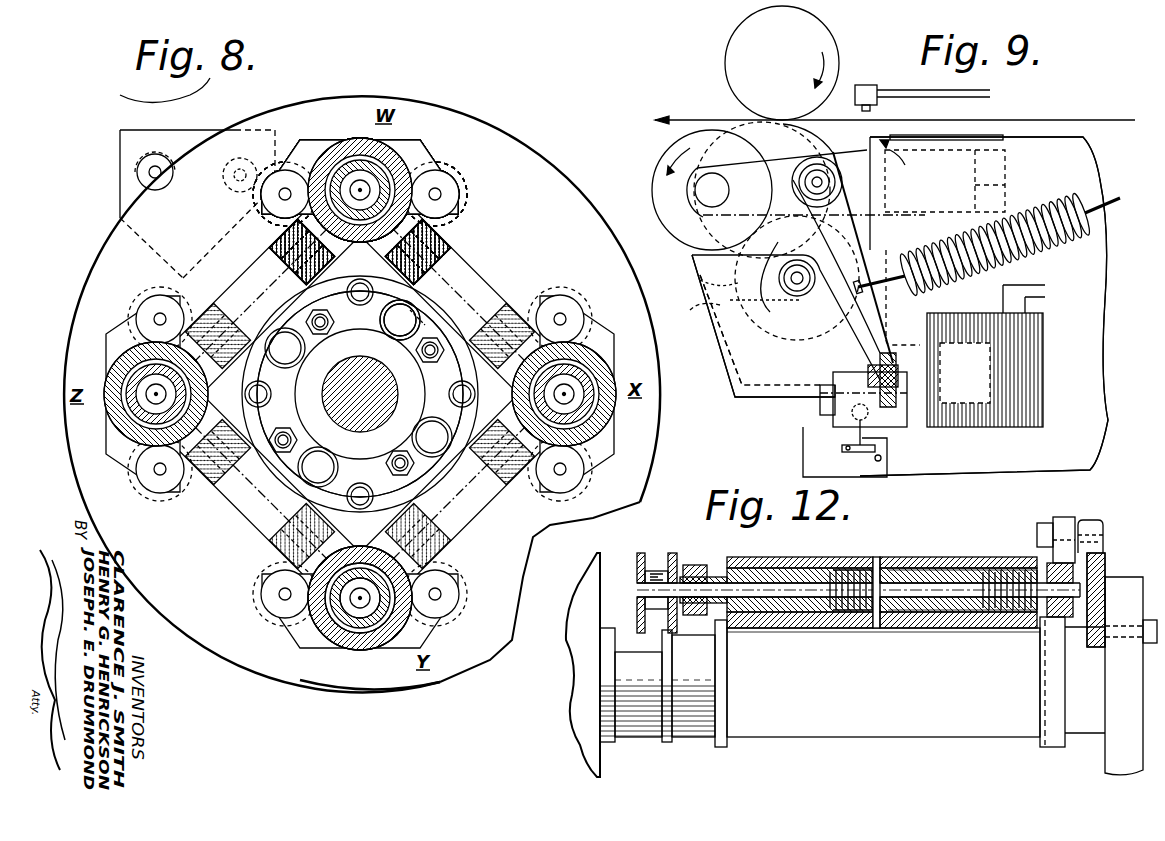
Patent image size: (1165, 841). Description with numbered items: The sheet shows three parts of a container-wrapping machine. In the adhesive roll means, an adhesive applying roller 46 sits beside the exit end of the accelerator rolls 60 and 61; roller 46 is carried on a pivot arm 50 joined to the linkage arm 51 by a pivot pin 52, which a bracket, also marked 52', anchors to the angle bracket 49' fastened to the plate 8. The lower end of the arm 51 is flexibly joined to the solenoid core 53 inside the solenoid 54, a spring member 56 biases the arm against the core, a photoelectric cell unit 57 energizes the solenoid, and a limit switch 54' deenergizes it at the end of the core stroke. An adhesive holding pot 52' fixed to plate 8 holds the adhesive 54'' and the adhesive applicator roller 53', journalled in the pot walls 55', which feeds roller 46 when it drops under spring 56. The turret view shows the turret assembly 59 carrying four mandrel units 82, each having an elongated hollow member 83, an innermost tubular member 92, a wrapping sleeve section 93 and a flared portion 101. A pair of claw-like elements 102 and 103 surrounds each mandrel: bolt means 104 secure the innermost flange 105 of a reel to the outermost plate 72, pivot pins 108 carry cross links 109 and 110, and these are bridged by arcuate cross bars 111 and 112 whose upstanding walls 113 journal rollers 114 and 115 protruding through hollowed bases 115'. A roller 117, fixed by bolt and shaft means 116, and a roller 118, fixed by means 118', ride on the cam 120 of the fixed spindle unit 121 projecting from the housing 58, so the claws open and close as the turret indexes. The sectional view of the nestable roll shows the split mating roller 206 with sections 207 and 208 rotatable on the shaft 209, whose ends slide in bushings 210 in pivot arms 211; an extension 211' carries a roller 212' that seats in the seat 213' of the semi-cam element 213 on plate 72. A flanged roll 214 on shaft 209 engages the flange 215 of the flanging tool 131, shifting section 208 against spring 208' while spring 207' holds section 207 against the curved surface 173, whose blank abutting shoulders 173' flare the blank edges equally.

In FIG. 9, the plate 8 is at (1086, 342).
In FIG. 9, the adhesive applying roller 46 is at (665, 153).
In FIG. 9, the angle bracket 49' is at (972, 176).
In FIG. 9, the pivot arm 50 is at (740, 222).
In FIG. 9, the linkage arm 51 is at (855, 228).
In FIG. 9, the pivot pin 52 is at (825, 166).
In FIG. 9, the adhesive holding pot 52' is at (870, 288).
In FIG. 9, the solenoid core 53 is at (872, 412).
In FIG. 9, the adhesive applicator roller 53' is at (797, 278).
In FIG. 9, the solenoid 54 is at (986, 370).
In FIG. 9, the limit switch 54' is at (845, 461).
In FIG. 9, the adhesive 54'' is at (705, 330).
In FIG. 9, the pot walls 55' is at (763, 342).
In FIG. 9, the spring member 56 is at (1035, 250).
In FIG. 9, the photoelectric cell unit 57 is at (865, 84).
In FIG. 12, the housing 58 is at (575, 728).
In FIG. 8, the turret assembly 59 is at (388, 688).
In FIG. 9, the accelerator roll 60 is at (790, 76).
In FIG. 9, the accelerator roll 61 is at (800, 152).
In FIG. 8, the outermost turret plate 72 is at (272, 665).
In FIG. 12, the outermost turret plate 72 is at (1112, 755).
In FIG. 8, the mandrel unit 82 is at (362, 135).
In FIG. 12, the mandrel unit 82 is at (898, 740).
In FIG. 8, the elongated hollow member 83 is at (322, 645).
In FIG. 8, the innermost hollow tubular member 92 is at (365, 612).
In FIG. 8, the wrapping sleeve section 93 is at (355, 645).
In FIG. 12, the curved flared portion 101 is at (1040, 632).
In FIG. 8, the claw-like element 102 is at (430, 140).
In FIG. 8, the claw-like element 103 is at (292, 142).
In FIG. 8, the bolt means 104 is at (430, 480).
In FIG. 8, the innermost flange 105 is at (395, 290).
In FIG. 8, the pivot pins 108 is at (455, 458).
In FIG. 8, the cross links 109 is at (300, 244).
In FIG. 8, the cross links 110 is at (412, 258).
In FIG. 8, the arcuate claw-like cross bar 111 is at (335, 148).
In FIG. 8, the cross bar 112 is at (425, 205).
In FIG. 8, the upstanding walls 113 is at (282, 170).
In FIG. 8, the rollers 114 is at (260, 200).
In FIG. 8, the rollers 115 is at (413, 372).
In FIG. 8, the hollowed-out base 115' is at (387, 384).
In FIG. 8, the bolt and shaft means 116 is at (400, 305).
In FIG. 8, the roller element 117 is at (455, 318).
In FIG. 8, the roller 118 is at (383, 393).
In FIG. 8, the securing means 118' is at (452, 310).
In FIG. 8, the cam 120 is at (328, 388).
In FIG. 8, the fixed spindle unit 121 is at (360, 432).
In FIG. 12, the flanging tool 131 is at (690, 735).
In FIG. 12, the curved surface 173 is at (743, 683).
In FIG. 12, the blank abutting shoulders 173' is at (916, 698).
In FIG. 12, the split mating roller 206 is at (905, 555).
In FIG. 12, the roller section 207 is at (800, 576).
In FIG. 12, the spring 207' is at (867, 574).
In FIG. 12, the roller section 208 is at (962, 552).
In FIG. 12, the spring 208' is at (1010, 565).
In FIG. 12, the shaft 209 is at (935, 600).
In FIG. 12, the bushings 210 is at (705, 565).
In FIG. 12, the pivot arms 211 is at (861, 546).
In FIG. 12, the arm extension 211' is at (1076, 502).
In FIG. 12, the roller 212' is at (1105, 514).
In FIG. 12, the semi-cam element 213 is at (1122, 600).
In FIG. 12, the seat 213' is at (1120, 580).
In FIG. 12, the flanged roll 214 is at (641, 552).
In FIG. 12, the flange 215 is at (660, 740).